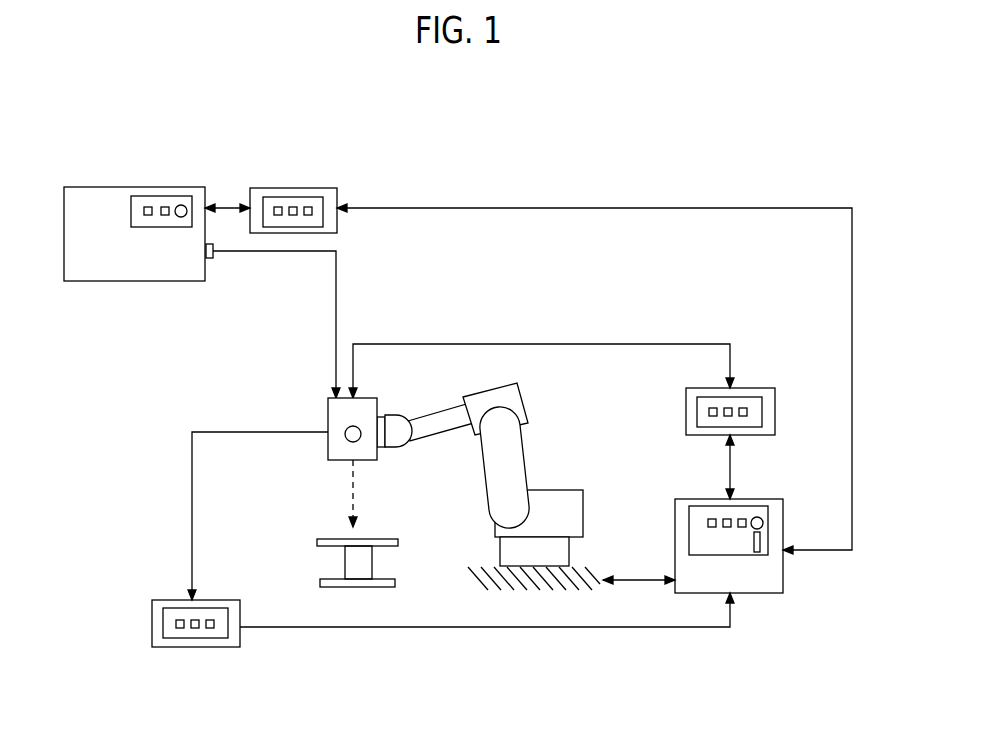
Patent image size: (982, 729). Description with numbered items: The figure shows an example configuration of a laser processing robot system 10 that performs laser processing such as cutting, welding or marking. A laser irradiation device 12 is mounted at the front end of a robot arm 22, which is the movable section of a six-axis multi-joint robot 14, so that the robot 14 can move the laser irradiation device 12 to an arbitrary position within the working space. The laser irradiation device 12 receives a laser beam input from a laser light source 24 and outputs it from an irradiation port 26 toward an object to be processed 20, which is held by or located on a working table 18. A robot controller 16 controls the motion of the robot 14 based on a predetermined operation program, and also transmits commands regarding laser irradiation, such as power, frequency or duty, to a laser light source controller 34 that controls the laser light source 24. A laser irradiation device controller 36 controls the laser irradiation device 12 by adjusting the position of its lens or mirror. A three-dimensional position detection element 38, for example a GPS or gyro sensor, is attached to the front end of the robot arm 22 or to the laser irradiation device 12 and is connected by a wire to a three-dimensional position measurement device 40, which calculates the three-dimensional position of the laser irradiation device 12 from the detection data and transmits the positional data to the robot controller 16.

The laser processing robot system 10 is at (740, 140).
The laser irradiation device 12 is at (305, 458).
The robot 14 is at (555, 425).
The robot controller 16 is at (783, 528).
The working table 18 is at (345, 562).
The object to be processed 20 is at (327, 537).
The robot arm 22 is at (443, 412).
The laser light source 24 is at (92, 281).
The irradiation port 26 is at (210, 257).
The laser light source controller 34 is at (337, 225).
The laser irradiation device controller 36 is at (763, 388).
The three-dimensional position detection element 38 is at (345, 428).
The three-dimensional position measurement device 40 is at (162, 600).